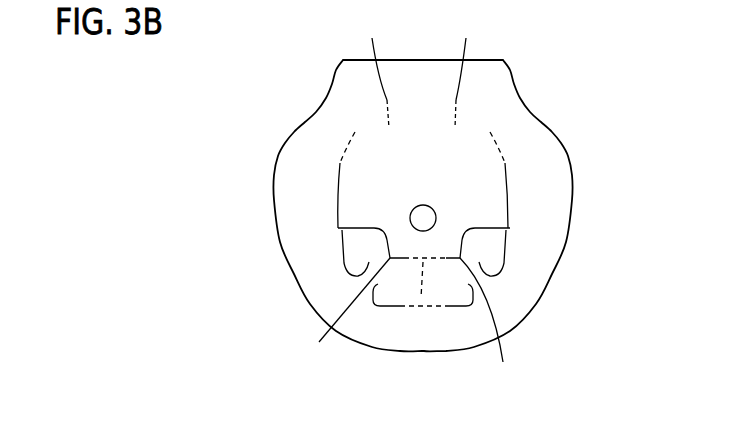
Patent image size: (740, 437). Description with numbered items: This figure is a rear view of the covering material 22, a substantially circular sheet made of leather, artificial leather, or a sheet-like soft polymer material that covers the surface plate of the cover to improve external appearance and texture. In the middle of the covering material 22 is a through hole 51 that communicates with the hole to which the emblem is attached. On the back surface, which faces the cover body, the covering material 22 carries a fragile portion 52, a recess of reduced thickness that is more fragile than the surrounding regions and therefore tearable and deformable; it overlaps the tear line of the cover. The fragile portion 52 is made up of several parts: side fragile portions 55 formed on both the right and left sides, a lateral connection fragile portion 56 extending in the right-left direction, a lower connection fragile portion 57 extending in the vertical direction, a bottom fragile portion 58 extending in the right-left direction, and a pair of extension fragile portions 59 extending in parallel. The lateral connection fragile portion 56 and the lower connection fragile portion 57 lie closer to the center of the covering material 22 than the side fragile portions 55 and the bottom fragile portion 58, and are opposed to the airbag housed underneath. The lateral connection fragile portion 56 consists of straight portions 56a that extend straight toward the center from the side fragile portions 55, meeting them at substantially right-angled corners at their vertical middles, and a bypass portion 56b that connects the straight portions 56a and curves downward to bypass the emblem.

The covering material 22 is at (521, 60).
The through hole 51 is at (423, 205).
The fragile portion 52 is at (338, 167).
The side fragile portions 55 is at (342, 256).
The lateral connection fragile portion 56 is at (383, 316).
The straight portions 56a is at (340, 226).
The bypass portion 56b is at (497, 326).
The lower connection fragile portion 57 is at (421, 298).
The bottom fragile portion 58 is at (447, 307).
The extension fragile portions 59 is at (419, 70).